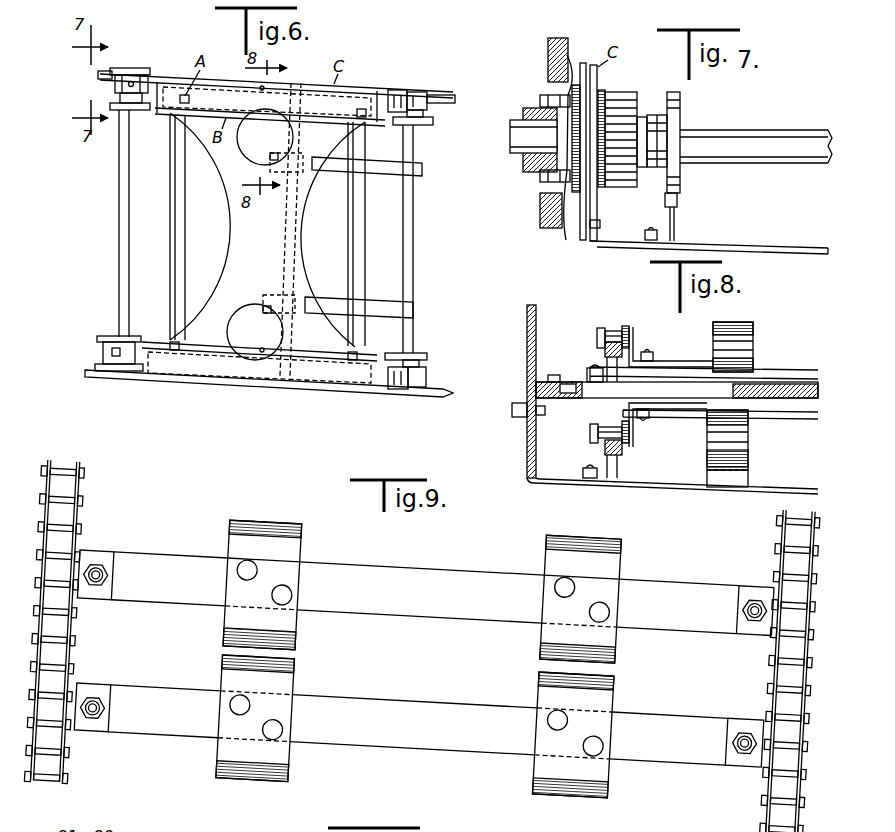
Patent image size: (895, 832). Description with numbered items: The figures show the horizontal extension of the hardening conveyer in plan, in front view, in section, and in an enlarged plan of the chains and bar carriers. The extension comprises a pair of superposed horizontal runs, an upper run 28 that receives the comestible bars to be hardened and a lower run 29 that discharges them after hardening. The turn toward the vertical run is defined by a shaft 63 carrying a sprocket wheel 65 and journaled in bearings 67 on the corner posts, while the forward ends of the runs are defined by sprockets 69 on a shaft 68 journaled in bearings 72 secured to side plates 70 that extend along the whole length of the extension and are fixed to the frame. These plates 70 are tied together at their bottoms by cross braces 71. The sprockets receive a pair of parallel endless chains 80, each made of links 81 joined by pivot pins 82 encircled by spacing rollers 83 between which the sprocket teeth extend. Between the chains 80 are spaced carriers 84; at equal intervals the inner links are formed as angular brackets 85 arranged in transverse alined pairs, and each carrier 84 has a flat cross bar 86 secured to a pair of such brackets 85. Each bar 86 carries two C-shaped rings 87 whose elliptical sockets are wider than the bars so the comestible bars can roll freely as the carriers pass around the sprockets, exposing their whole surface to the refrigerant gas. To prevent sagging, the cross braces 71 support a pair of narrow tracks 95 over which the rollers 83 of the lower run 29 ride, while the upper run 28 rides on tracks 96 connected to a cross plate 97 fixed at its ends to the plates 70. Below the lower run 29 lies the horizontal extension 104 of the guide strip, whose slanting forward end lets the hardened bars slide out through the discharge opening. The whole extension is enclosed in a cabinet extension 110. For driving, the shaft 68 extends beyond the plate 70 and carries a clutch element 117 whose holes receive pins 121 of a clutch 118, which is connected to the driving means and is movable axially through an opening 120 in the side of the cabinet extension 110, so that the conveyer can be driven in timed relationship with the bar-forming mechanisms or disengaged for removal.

In FIG. 8, the upper horizontal run 28 is at (597, 331).
In FIG. 8, the lower horizontal run 29 is at (590, 432).
In FIG. 6, the shaft 63 is at (414, 233).
In FIG. 6, the sprocket wheel 65 is at (426, 123).
In FIG. 6, the bearings 67 is at (419, 90).
In FIG. 6, the shaft 68 is at (120, 194).
In FIG. 7, the shaft 68 is at (738, 142).
In FIG. 6, the sprockets 69 is at (118, 112).
In FIG. 7, the sprockets 69 is at (680, 101).
In FIG. 6, the plates 70 is at (223, 79).
In FIG. 7, the plates 70 is at (600, 79).
In FIG. 8, the plates 70 is at (527, 331).
In FIG. 6, the cross braces 71 is at (172, 263).
In FIG. 7, the cross braces 71 is at (730, 244).
In FIG. 8, the cross braces 71 is at (669, 492).
In FIG. 6, the bearings 72 is at (115, 87).
In FIG. 7, the bearings 72 is at (620, 118).
In FIG. 8, the endless chains 80 is at (631, 329).
In FIG. 9, the endless chains 80 is at (91, 485).
In FIG. 9, the links 81 is at (77, 650).
In FIG. 9, the pivot pins 82 is at (86, 521).
In FIG. 8, the spacing rollers 83 is at (613, 342).
In FIG. 9, the spacing rollers 83 is at (65, 468).
In FIG. 8, the carriers 84 is at (783, 367).
In FIG. 9, the carriers 84 is at (464, 567).
In FIG. 8, the angular brackets 85 is at (634, 355).
In FIG. 9, the angular brackets 85 is at (110, 556).
In FIG. 8, the cross bar 86 is at (773, 419).
In FIG. 9, the cross bar 86 is at (408, 602).
In FIG. 8, the C-shaped ring 87 is at (741, 330).
In FIG. 9, the C-shaped ring 87 is at (290, 676).
In FIG. 7, the tracks 95 is at (678, 201).
In FIG. 8, the tracks 95 is at (618, 458).
In FIG. 6, the tracks 96 is at (268, 160).
In FIG. 8, the tracks 96 is at (607, 359).
In FIG. 6, the cross plate 97 is at (232, 247).
In FIG. 8, the cross plate 97 is at (791, 392).
In FIG. 6, the horizontal extension 104 is at (382, 176).
In FIG. 8, the horizontal extension 104 is at (707, 470).
In FIG. 7, the cabinet extension 110 is at (540, 212).
In FIG. 6, the clutch element 117 is at (143, 71).
In FIG. 7, the clutch element 117 is at (583, 63).
In FIG. 7, the clutch 118 is at (548, 178).
In FIG. 7, the opening 120 is at (545, 156).
In FIG. 7, the pins 121 is at (548, 60).